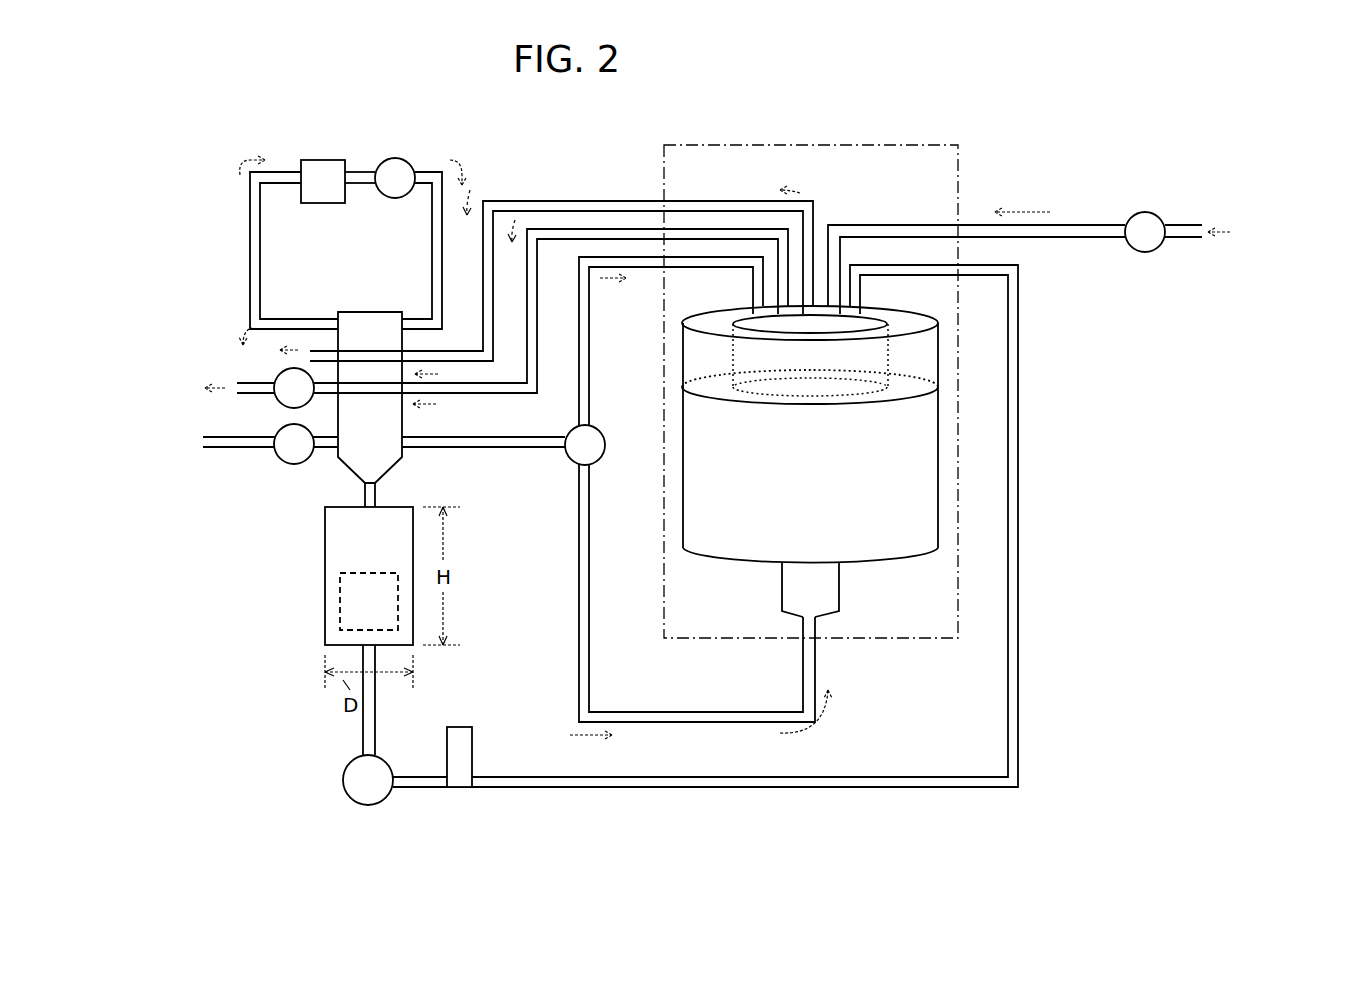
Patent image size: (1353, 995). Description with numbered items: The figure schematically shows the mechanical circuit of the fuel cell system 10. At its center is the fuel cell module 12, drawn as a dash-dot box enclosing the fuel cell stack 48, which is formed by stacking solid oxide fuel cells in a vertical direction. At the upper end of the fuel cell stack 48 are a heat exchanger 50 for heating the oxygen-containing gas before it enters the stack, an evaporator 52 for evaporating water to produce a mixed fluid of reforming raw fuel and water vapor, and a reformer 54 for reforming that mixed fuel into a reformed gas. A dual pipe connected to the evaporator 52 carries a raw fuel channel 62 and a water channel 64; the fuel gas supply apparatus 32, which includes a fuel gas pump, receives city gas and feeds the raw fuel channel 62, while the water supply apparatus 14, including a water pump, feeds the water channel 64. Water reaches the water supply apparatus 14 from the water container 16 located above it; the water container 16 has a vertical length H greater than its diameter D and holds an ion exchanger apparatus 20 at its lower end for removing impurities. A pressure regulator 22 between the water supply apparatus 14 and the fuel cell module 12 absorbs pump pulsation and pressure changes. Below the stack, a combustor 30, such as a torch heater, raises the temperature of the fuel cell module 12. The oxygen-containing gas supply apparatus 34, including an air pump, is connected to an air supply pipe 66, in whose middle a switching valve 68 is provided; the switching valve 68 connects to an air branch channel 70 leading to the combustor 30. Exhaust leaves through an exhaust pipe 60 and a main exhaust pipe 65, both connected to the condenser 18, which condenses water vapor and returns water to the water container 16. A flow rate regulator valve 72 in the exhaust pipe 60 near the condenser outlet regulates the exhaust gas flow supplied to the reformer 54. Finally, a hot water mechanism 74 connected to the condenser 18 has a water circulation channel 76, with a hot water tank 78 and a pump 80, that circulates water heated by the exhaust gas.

The fuel cell system 10 is at (1098, 88).
The fuel cell module 12 is at (962, 163).
The water supply apparatus 14 is at (343, 780).
The water container 16 is at (325, 545).
The condenser 18 is at (370, 312).
The ion exchanger apparatus 20 is at (340, 600).
The pressure regulator 22 is at (460, 727).
The combustor 30 is at (782, 591).
The fuel gas supply apparatus 32 is at (1145, 212).
The oxygen-containing gas supply apparatus 34 is at (283, 462).
The fuel cell stack 48 is at (896, 563).
The heat exchanger 50 is at (907, 322).
The evaporator 52 is at (936, 347).
The reformer 54 is at (940, 376).
The exhaust pipe 60 is at (553, 240).
The raw fuel channel 62 is at (1062, 240).
The water channel 64 is at (1020, 457).
The main exhaust pipe 65 is at (552, 201).
The air supply pipe 66 is at (655, 267).
The switching valve 68 is at (606, 445).
The air branch channel 70 is at (590, 598).
The flow rate regulator valve 72 is at (282, 403).
The hot water mechanism 74 is at (372, 118).
The water circulation channel 76 is at (250, 242).
The hot water tank 78 is at (325, 160).
The pump 80 is at (395, 158).